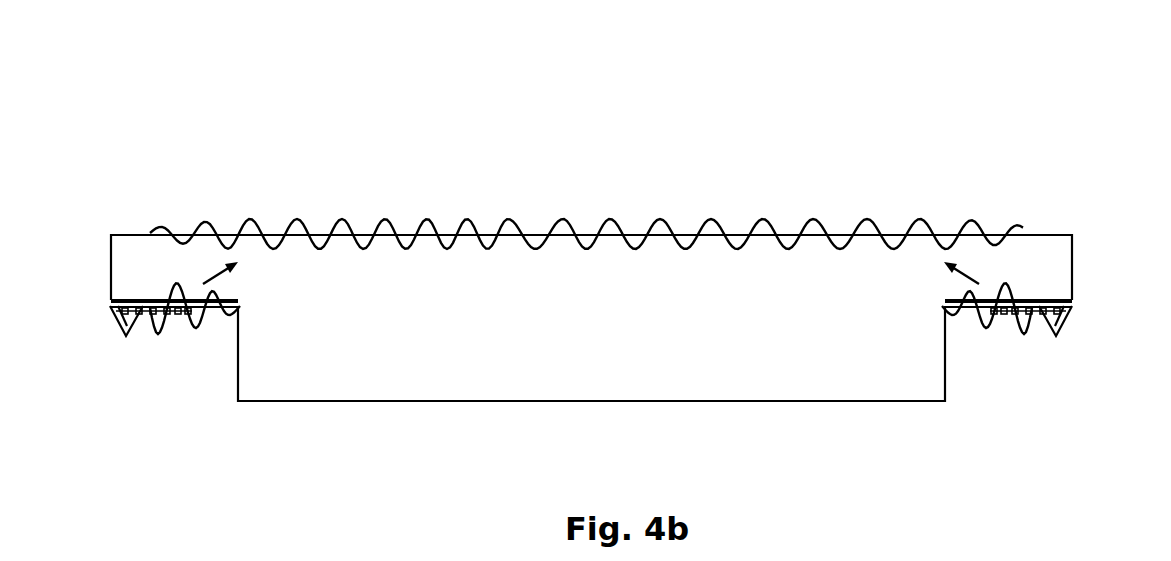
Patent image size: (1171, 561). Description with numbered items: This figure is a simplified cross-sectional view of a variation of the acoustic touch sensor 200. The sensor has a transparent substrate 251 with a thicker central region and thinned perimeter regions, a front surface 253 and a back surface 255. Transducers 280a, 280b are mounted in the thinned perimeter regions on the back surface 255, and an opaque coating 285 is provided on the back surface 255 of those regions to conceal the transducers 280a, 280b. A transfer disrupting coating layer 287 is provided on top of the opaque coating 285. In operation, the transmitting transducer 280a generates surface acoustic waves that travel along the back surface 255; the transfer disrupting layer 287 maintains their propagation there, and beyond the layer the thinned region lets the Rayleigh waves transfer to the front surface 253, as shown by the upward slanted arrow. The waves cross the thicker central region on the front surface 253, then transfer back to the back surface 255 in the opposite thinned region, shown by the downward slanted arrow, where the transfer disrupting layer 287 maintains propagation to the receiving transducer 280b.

The acoustic touch sensor 200 is at (127, 65).
The substrate 251 is at (615, 338).
The front surface 253 is at (406, 232).
The back surface 255 is at (455, 402).
The transmitting transducer 280a is at (112, 313).
The receiving transducer 280b is at (1068, 313).
The opaque coating 285 is at (217, 322).
The transfer disrupting coating layer 287 is at (170, 300).